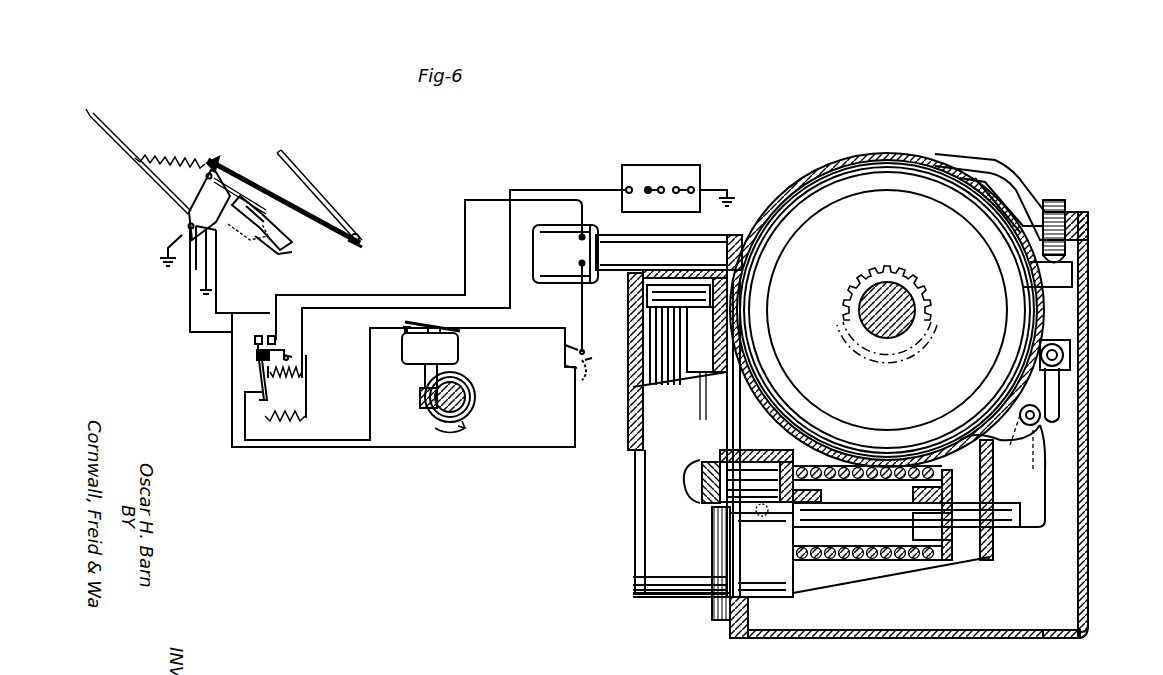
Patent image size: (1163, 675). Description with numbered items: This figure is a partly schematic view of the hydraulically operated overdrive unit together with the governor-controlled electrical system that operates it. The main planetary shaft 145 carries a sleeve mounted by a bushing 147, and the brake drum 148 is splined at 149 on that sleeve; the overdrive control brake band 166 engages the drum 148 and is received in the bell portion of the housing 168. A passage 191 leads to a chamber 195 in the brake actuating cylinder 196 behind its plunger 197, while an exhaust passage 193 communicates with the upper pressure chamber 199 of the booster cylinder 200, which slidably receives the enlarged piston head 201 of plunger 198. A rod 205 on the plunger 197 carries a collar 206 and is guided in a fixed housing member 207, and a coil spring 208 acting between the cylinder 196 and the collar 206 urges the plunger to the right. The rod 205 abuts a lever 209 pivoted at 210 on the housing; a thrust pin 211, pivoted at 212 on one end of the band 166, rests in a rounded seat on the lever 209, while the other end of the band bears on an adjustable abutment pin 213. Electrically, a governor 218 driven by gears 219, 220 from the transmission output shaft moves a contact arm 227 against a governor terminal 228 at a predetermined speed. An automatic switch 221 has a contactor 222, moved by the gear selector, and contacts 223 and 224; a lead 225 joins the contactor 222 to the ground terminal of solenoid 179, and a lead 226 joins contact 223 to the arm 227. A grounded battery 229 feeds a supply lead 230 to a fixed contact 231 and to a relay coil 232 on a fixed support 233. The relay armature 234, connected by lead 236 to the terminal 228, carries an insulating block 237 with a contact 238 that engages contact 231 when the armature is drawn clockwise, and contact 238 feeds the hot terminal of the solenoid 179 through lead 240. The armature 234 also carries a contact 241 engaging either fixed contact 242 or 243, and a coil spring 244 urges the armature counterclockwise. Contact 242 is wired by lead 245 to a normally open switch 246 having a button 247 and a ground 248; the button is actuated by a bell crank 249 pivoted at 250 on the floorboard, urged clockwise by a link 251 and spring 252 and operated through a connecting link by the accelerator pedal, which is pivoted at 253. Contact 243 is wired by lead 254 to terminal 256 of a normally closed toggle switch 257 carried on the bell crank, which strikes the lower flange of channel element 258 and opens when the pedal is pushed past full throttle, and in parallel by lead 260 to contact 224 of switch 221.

The main planetary shaft 145 is at (905, 304).
The bushing 147 is at (912, 318).
The brake drum 148 is at (818, 214).
The spline 149 is at (872, 272).
The overdrive control brake band 166 is at (978, 179).
The housing 168 is at (917, 156).
The solenoid 179 is at (565, 227).
The passage 191 is at (758, 518).
The exhaust passage 193 is at (655, 270).
The chamber 195 is at (775, 441).
The brake actuating cylinder 196 is at (690, 605).
The plunger 197 is at (714, 504).
The plunger 198 is at (642, 331).
The upper pressure chamber 199 is at (646, 297).
The booster cylinder 200 is at (640, 387).
The enlarged piston head 201 is at (650, 309).
The rod 205 is at (883, 499).
The collar 206 is at (912, 537).
The fixed housing member 207 is at (993, 557).
The coil spring 208 is at (848, 557).
The lever 209 is at (1046, 457).
The pivot 210 is at (1040, 419).
The thrust pin 211 is at (1060, 381).
The pin 212 is at (1064, 353).
The adjustable abutment pin 213 is at (1066, 257).
The electrical governor 218 is at (452, 350).
The gear 219 is at (420, 399).
The gear 220 is at (440, 418).
The automatic switch 221 is at (608, 352).
The contactor 222 is at (584, 351).
The contact point 223 is at (563, 348).
The contact point 224 is at (580, 373).
The lead 225 is at (582, 294).
The lead 226 is at (467, 318).
The contact arm 227 is at (424, 323).
The governor terminal 228 is at (402, 334).
The battery 229 is at (690, 164).
The supply lead 230 is at (352, 311).
The fixed contact 231 is at (290, 351).
The relay coil 232 is at (290, 384).
The fixed support 233 is at (308, 408).
The conducting armature 234 is at (258, 373).
The lead 236 is at (300, 443).
The insulating block 237 is at (256, 356).
The contact 238 is at (290, 361).
The lead 240 is at (362, 297).
The contact 241 is at (262, 336).
The fixed contact 242 is at (256, 348).
The fixed contact 243 is at (278, 339).
The coil spring 244 is at (284, 423).
The lead 245 is at (188, 303).
The normally open switch 246 is at (188, 226).
The operating button 247 is at (190, 204).
The ground 248 is at (168, 237).
The bell crank 249 is at (209, 179).
The pivot 250 is at (220, 163).
The link 251 is at (152, 178).
The coil spring 252 is at (192, 158).
The pivot 253 is at (362, 238).
The lead 254 is at (228, 305).
The terminal 256 is at (248, 227).
The toggle switch 257 is at (283, 243).
The channel element 258 is at (290, 215).
The lead 260 is at (232, 402).